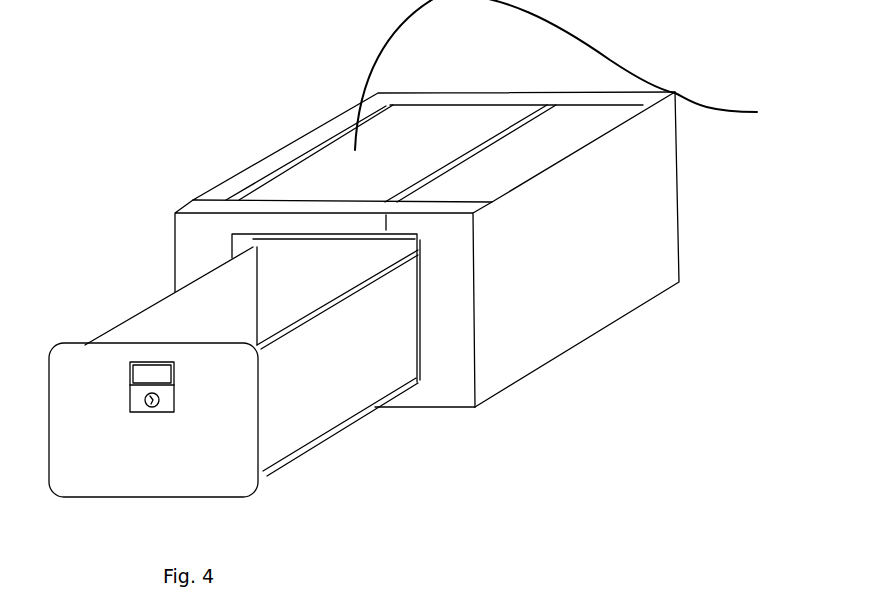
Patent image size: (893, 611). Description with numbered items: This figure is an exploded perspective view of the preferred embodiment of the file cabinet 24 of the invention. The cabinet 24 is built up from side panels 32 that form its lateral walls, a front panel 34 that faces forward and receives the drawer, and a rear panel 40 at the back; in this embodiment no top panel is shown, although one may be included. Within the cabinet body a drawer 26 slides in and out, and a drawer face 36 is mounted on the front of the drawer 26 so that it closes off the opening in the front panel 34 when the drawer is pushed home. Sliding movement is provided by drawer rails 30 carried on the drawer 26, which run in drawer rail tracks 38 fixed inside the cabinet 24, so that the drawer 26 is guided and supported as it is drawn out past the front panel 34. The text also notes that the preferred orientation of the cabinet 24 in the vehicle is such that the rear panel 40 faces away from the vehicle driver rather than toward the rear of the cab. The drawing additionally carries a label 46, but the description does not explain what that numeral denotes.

The cabinet 24 is at (622, 360).
The drawer 26 is at (163, 320).
The drawer rails 30 is at (337, 418).
The side panels 32 is at (655, 197).
The front panel 34 is at (203, 248).
The drawer face 36 is at (208, 462).
The drawer rail tracks 38 is at (442, 410).
The rear panel 40 is at (455, 132).
The lock 46 is at (788, 607).